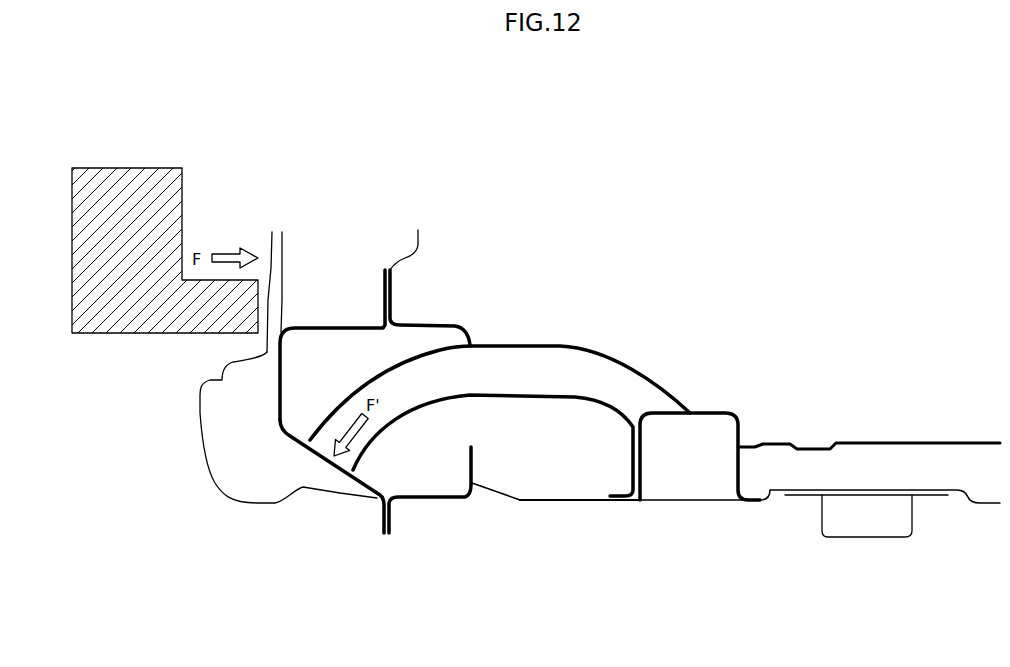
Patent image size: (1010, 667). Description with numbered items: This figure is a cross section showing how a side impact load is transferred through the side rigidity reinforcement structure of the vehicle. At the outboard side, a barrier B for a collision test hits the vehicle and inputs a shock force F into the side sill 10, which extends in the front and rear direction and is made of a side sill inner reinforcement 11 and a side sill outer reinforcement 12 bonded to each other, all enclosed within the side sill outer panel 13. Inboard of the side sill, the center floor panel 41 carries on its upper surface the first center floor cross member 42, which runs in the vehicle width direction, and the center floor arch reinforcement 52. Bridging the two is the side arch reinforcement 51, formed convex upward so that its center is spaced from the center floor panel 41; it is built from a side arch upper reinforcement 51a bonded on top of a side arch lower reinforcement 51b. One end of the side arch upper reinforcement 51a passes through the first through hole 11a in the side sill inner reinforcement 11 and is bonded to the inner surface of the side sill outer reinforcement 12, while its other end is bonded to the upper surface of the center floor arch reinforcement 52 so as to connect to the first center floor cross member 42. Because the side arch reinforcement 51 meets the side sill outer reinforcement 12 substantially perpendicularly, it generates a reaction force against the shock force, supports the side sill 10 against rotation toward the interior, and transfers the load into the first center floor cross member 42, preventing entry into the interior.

The barrier B is at (185, 186).
The side sill 10 is at (600, 462).
The side sill inner reinforcement 11 is at (430, 322).
The first through hole 11a is at (466, 412).
The side sill outer reinforcement 12 is at (278, 388).
The side sill outer panel 13 is at (258, 505).
The center floor panel 41 is at (862, 497).
The first center floor cross member 42 is at (920, 442).
The side arch reinforcement 51 is at (500, 353).
The side arch upper reinforcement 51a is at (540, 342).
The side arch lower reinforcement 51b is at (580, 398).
The center floor arch reinforcement 52 is at (742, 470).